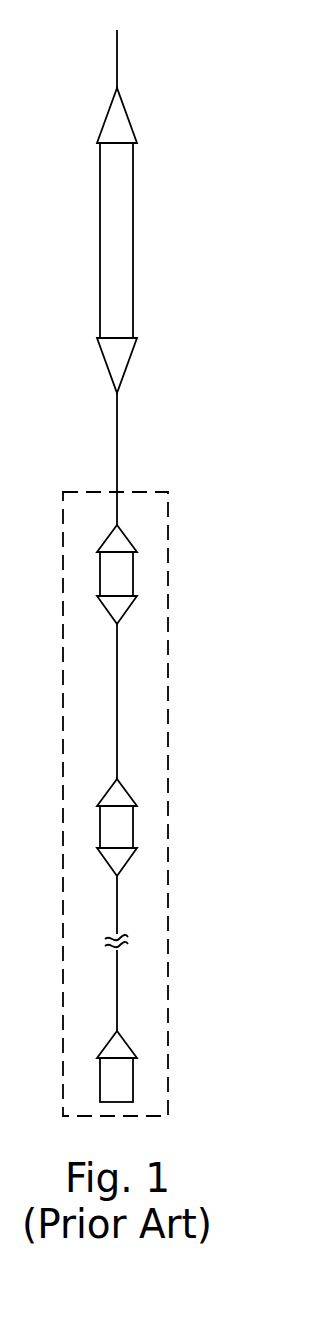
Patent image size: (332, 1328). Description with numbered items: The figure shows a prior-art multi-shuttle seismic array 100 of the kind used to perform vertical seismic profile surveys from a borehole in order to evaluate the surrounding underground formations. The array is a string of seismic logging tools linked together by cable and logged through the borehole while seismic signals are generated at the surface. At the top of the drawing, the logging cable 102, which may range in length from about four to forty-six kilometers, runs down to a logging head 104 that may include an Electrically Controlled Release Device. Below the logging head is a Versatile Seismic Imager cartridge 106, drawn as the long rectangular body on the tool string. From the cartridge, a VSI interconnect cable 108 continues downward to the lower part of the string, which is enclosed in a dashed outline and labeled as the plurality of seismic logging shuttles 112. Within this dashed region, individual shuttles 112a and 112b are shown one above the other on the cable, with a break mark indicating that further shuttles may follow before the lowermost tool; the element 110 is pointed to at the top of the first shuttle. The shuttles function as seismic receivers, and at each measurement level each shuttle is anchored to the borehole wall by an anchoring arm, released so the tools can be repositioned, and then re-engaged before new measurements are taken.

The multi-shuttle seismic array 100 is at (168, 1098).
The logging cable 102 is at (117, 60).
The logging head 104 is at (130, 123).
The Versatile Seismic Imager cartridge 106 is at (133, 235).
The VSI interconnect cable 108 is at (117, 450).
The coupler input taper 110 is at (130, 542).
The seismic logging shuttles 112 is at (168, 1015).
The seismic logging shuttle 112a is at (133, 577).
The seismic logging shuttle 112b is at (133, 832).